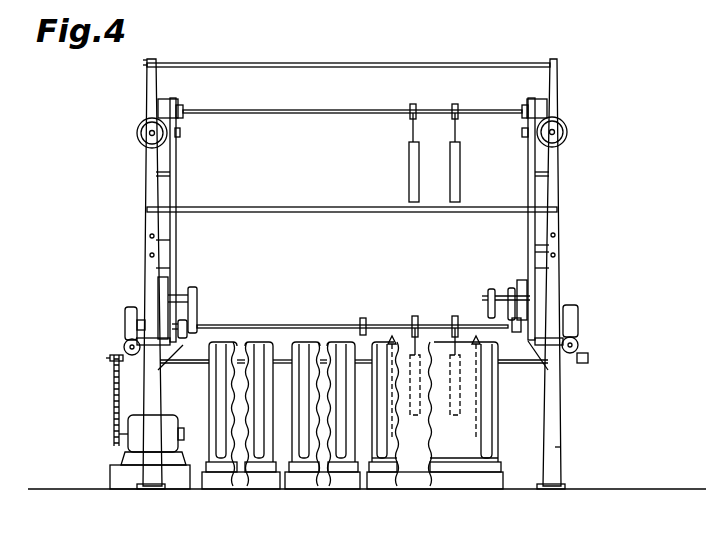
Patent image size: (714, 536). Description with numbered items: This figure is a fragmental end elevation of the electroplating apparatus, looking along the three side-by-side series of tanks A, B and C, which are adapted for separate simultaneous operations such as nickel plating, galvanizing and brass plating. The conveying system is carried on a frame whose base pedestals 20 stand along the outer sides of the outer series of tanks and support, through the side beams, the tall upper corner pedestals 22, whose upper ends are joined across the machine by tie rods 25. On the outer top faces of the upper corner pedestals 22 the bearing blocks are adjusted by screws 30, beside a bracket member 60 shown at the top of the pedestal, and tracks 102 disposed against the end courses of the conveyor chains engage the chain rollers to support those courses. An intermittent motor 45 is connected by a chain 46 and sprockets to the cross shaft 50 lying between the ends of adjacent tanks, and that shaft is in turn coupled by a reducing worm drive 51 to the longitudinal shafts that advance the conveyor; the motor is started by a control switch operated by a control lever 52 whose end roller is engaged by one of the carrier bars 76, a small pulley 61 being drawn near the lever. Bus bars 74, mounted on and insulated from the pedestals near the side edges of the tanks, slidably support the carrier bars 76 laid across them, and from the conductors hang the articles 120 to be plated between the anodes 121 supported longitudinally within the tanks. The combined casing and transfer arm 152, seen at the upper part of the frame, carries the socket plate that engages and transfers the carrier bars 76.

The base pedestal 20 is at (561, 448).
The upper corner pedestal 22 is at (146, 226).
The tie rod 25 is at (403, 63).
The screw 30 is at (138, 136).
The intermittent motor 45 is at (126, 448).
The chain 46 is at (112, 400).
The cross shaft 50 is at (177, 364).
The reducing worm drive 51 is at (118, 363).
The control lever 52 is at (490, 296).
The bearing bracket 60 is at (556, 108).
The sprocket 61 is at (194, 330).
The bus bar 74 is at (361, 325).
The carrier bar 76 is at (312, 110).
The track 102 is at (177, 193).
The articles to be plated 120 is at (408, 181).
The anode 121 is at (417, 428).
The combined casing and transfer arm 152 is at (198, 306).
The series of tanks A is at (270, 491).
The series of tanks B is at (343, 491).
The series of tanks C is at (475, 491).